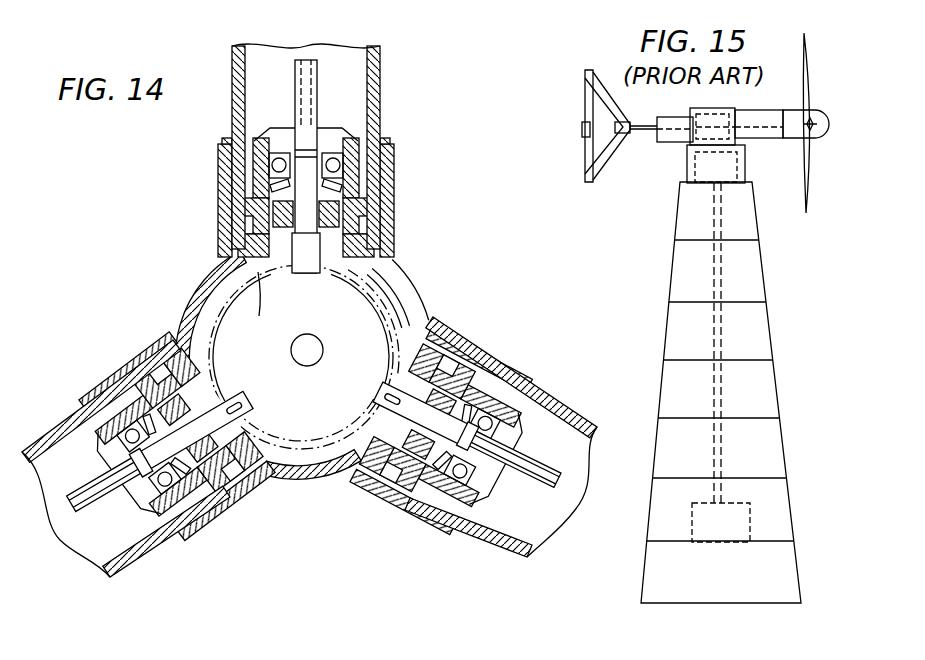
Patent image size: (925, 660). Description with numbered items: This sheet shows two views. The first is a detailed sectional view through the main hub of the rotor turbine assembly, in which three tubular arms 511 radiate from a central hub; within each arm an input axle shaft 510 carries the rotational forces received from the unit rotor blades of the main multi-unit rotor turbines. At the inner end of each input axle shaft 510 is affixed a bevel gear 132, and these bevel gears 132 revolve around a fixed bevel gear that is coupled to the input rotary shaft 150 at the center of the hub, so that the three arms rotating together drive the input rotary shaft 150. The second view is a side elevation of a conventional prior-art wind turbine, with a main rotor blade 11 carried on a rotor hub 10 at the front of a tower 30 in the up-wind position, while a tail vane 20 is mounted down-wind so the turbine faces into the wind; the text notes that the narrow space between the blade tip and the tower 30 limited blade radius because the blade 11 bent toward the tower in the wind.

In FIG. 14, the tubular support arm 511 is at (233, 120).
In FIG. 14, the input axle shaft 510 is at (317, 88).
In FIG. 14, the bevel gear 132 is at (225, 360).
In FIG. 14, the input rotary shaft 150 is at (317, 338).
In FIG. 15, the tail vane 20 is at (585, 92).
In FIG. 15, the rotor blade 11 is at (807, 50).
In FIG. 15, the rotor hub 10 is at (817, 121).
In FIG. 15, the tower 30 is at (772, 355).